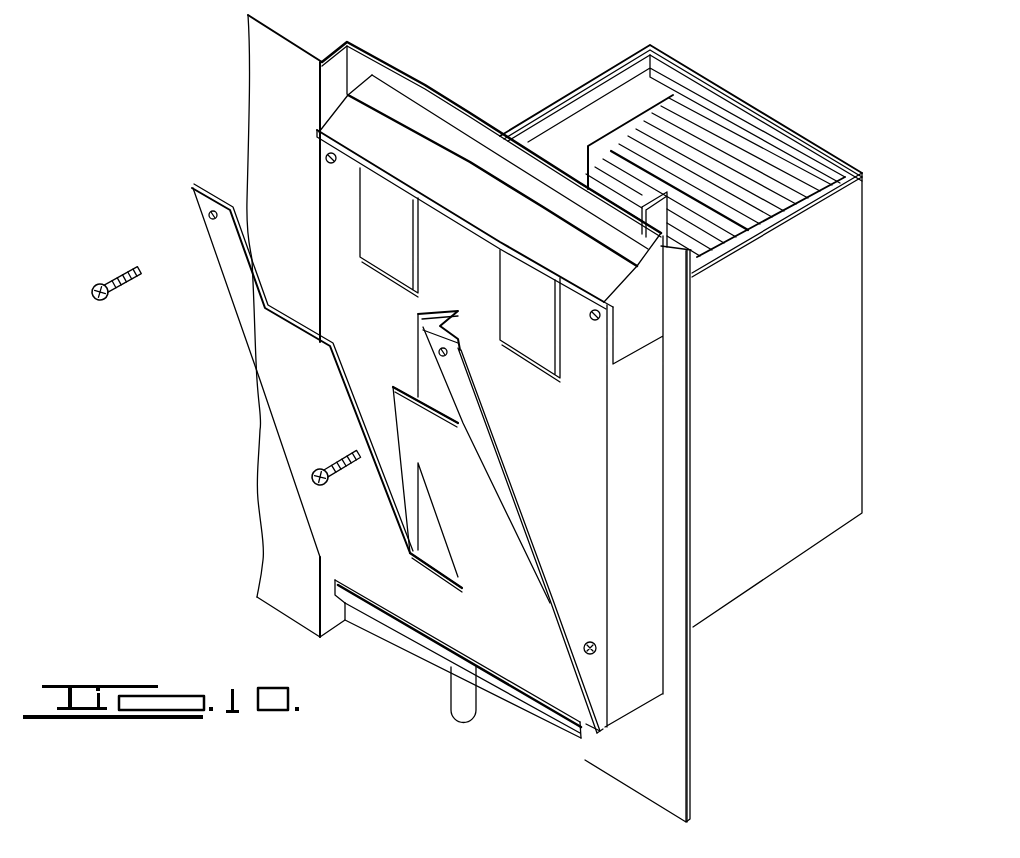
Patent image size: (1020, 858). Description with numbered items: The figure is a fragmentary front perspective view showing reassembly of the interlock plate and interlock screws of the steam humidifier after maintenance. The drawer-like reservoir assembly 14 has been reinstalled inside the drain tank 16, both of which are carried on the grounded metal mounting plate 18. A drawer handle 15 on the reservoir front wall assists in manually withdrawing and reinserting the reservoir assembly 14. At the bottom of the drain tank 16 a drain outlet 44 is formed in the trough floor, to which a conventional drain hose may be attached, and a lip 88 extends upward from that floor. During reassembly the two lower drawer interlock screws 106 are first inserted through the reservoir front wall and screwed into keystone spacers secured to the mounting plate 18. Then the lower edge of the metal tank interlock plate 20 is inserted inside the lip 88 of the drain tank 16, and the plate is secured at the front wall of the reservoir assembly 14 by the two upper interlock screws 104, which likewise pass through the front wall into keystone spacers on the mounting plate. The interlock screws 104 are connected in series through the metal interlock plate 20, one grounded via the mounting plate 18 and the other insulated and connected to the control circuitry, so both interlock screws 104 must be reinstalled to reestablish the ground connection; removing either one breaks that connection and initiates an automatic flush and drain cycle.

The reservoir assembly 14 is at (753, 118).
The drawer handle 15 is at (420, 354).
The drain tank 16 is at (847, 253).
The mounting plate 18 is at (665, 732).
The tank interlock plate 20 is at (268, 357).
The drain outlet 44 is at (453, 700).
The lip 88 is at (558, 718).
The interlock screws 104 is at (97, 304).
The lower drawer interlock screws 106 is at (583, 648).